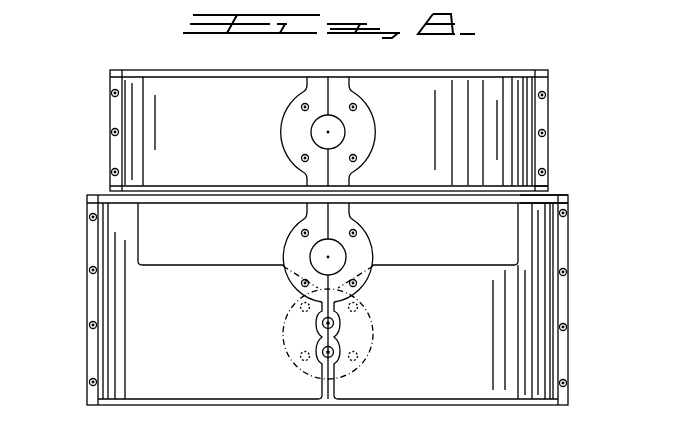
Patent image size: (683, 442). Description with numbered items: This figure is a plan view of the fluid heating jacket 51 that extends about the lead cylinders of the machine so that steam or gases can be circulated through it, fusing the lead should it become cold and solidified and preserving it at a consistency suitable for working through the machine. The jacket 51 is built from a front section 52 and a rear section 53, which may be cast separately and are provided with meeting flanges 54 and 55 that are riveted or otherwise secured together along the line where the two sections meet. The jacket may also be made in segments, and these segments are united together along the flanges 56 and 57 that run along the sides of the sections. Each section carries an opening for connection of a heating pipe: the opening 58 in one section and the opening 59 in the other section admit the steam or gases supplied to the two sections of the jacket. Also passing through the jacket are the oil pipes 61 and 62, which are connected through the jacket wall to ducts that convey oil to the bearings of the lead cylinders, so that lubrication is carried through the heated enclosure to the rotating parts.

The jacket 51 is at (88, 260).
The front section 52 is at (505, 162).
The rear section 53 is at (532, 316).
The meeting flange 54 is at (543, 180).
The meeting flange 55 is at (560, 192).
The flange 56 is at (542, 113).
The flange 57 is at (565, 368).
The opening 58 is at (311, 131).
The opening 59 is at (312, 250).
The oil pipe 61 is at (321, 352).
The oil pipe 62 is at (321, 324).